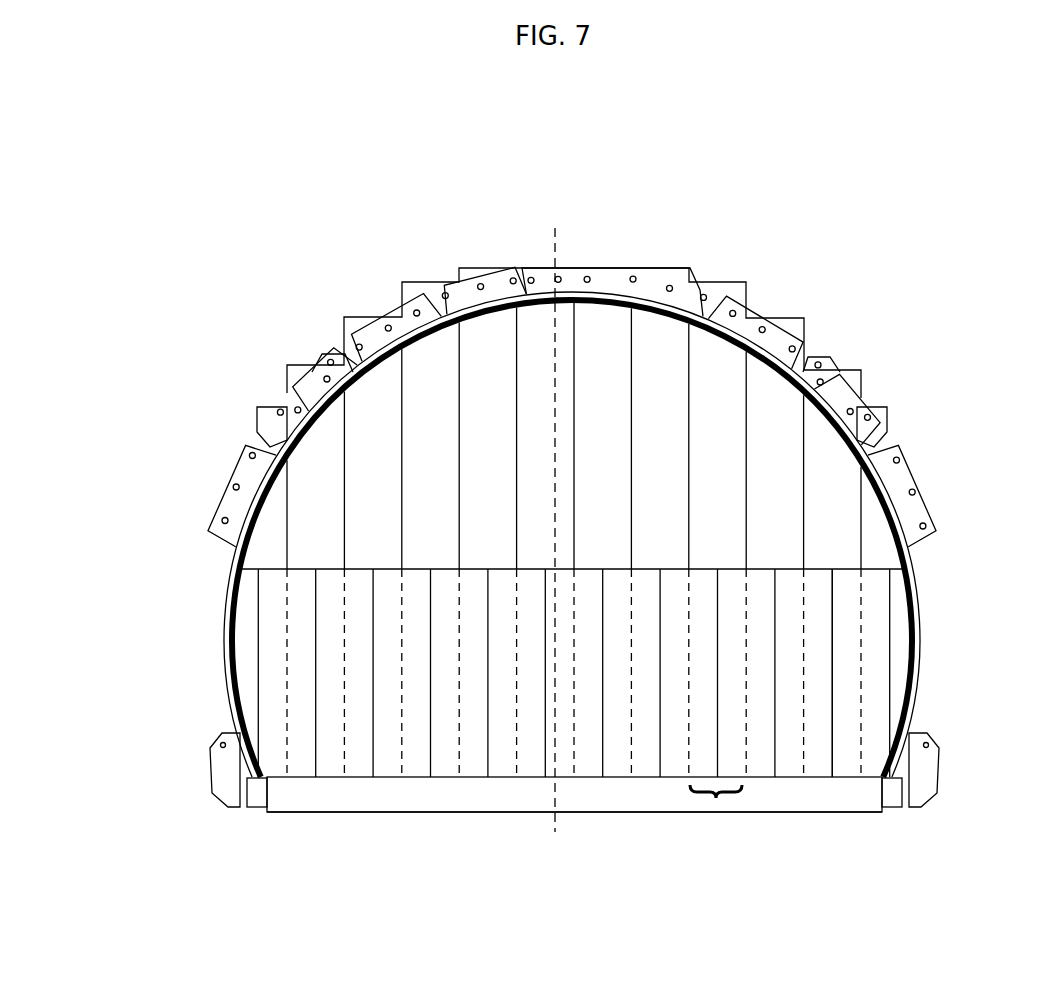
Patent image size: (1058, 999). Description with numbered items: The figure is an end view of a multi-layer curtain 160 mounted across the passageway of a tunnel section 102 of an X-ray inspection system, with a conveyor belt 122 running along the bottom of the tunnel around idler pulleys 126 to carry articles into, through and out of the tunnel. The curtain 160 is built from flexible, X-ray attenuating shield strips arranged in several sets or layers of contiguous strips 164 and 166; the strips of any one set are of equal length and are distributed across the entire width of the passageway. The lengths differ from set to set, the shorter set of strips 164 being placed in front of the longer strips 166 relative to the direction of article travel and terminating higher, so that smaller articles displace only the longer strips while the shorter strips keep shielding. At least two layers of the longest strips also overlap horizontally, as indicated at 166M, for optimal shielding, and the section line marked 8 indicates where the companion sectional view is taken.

The tunnel section 102 is at (391, 303).
The conveyor belt 122 is at (333, 803).
The idler pulley 126 is at (400, 803).
The multi-layer curtain 160 is at (822, 753).
The set of contiguous strips 164 is at (779, 406).
The set of contiguous strips 166 is at (401, 736).
The overlapping strips 166M is at (710, 824).
The section line 8- 8 is at (540, 221).